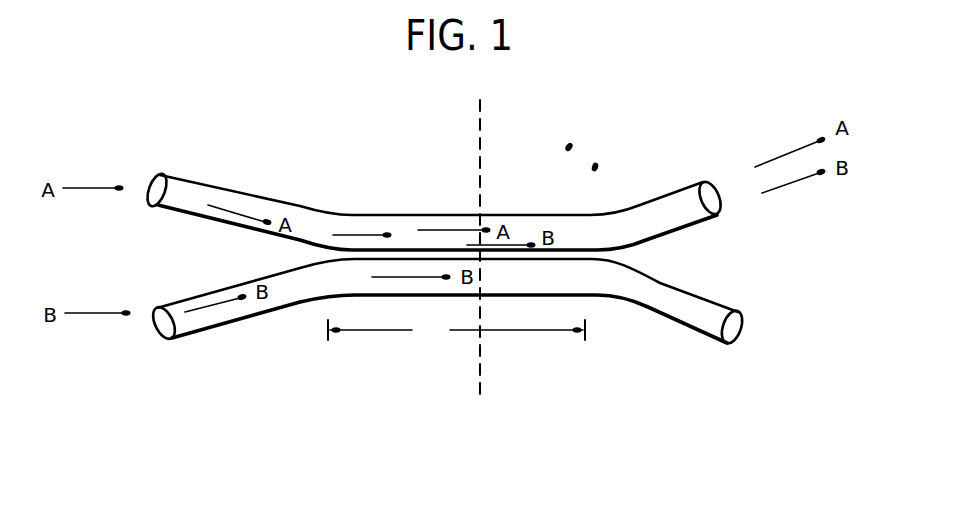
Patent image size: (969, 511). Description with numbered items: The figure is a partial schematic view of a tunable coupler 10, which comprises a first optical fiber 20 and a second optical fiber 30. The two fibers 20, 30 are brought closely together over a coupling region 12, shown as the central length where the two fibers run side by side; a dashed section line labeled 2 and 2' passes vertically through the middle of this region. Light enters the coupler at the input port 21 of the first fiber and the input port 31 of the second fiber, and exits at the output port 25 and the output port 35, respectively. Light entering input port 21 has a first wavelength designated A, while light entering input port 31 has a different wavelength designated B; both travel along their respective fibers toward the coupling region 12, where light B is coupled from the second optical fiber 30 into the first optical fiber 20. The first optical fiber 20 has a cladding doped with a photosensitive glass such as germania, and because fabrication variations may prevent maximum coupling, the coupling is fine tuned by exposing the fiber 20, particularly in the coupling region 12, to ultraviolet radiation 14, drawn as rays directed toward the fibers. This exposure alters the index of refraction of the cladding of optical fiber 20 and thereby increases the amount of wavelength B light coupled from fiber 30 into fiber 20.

The coupler 10 is at (631, 452).
The coupling region 12 is at (456, 330).
The ultraviolet radiation 14 is at (596, 164).
The section line 2-2' 2 is at (480, 160).
The section line 2- 2' is at (483, 342).
The first optical fiber 20 is at (237, 191).
The input port 21 is at (156, 173).
The output port 25 is at (718, 216).
The second optical fiber 30 is at (220, 325).
The input port 31 is at (152, 329).
The output port 35 is at (738, 343).